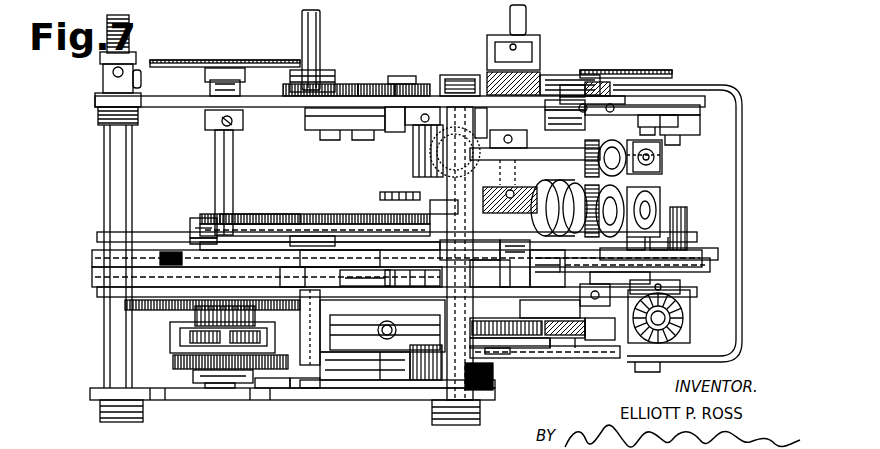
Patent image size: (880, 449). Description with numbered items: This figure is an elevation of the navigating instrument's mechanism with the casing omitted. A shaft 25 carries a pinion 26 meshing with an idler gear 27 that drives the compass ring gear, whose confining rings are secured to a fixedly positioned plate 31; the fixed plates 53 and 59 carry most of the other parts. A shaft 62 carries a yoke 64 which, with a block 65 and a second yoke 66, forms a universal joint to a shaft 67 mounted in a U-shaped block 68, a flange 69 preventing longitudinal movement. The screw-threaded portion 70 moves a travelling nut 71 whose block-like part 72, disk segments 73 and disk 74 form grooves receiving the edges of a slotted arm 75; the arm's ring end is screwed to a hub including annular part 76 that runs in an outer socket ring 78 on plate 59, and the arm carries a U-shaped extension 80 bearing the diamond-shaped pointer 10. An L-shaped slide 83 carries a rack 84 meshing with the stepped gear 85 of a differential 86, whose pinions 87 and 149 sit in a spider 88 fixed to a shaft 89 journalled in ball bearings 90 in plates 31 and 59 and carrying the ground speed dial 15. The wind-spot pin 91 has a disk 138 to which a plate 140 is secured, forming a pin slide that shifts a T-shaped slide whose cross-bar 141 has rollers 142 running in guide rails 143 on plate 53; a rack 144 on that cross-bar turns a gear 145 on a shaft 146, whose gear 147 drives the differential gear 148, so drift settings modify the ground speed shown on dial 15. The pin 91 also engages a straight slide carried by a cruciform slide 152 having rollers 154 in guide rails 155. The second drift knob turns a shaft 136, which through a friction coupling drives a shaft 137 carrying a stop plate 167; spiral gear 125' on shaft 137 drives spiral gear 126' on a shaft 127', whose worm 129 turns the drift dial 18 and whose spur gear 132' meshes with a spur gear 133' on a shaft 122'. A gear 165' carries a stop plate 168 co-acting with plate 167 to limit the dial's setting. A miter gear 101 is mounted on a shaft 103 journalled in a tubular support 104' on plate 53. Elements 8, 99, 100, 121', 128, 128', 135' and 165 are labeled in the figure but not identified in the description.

The rack 8 is at (391, 84).
The diamond-shaped pointer 10 is at (570, 73).
The ground speed dial 15 is at (170, 60).
The drift dial 18 is at (652, 70).
The shaft 25 is at (321, 36).
The pinion 26 is at (334, 84).
The idler gear 27 is at (413, 84).
The fixedly positioned plate 31 is at (684, 121).
The fixed plate 53 is at (92, 256).
The fixed plate 59 is at (92, 388).
The shaft 62 is at (305, 330).
The yoke 64 is at (366, 372).
The block 65 is at (399, 374).
The yoke 66 is at (420, 378).
The shaft 67 is at (545, 348).
The U-shaped block 68 is at (502, 371).
The flange 69 is at (520, 346).
The screw-threaded portion 70 is at (600, 348).
The travelling nut 71 is at (566, 319).
The part of travelling nut 72 is at (532, 319).
The disk segments 73 is at (580, 348).
The disk 74 is at (560, 348).
The slotted arm 75 is at (352, 362).
The annular part of hub 76 is at (382, 362).
The outer socket ring 78 is at (346, 380).
The U-shaped extension 80 is at (742, 322).
The L-shaped slide 83 is at (125, 296).
The rack 84 is at (125, 306).
The gear 85 is at (195, 313).
The differential 86 is at (193, 376).
The pinions 87 is at (180, 328).
The spider 88 is at (185, 341).
The shaft 89 is at (234, 155).
The ball bearings 90 is at (243, 119).
The wind-spot pin 91 is at (380, 195).
The gear 99 is at (684, 311).
The hub 100 is at (690, 325).
The miter gear 101 is at (682, 291).
The shaft 103 is at (656, 212).
The tubular support 104' is at (679, 228).
The gear 121' is at (439, 168).
The shaft 122' is at (422, 144).
The spiral gear 125' is at (506, 191).
The spiral gear 126' is at (554, 202).
The shaft 127' is at (680, 200).
The block 128 is at (434, 210).
The shaft 128' is at (677, 165).
The worm 129 is at (586, 172).
The spur gear 132' is at (659, 204).
The spur gear 133' is at (661, 157).
The bracket 135' is at (518, 140).
The shaft 136 is at (528, 22).
The shaft 137 is at (528, 150).
The disk 138 is at (382, 219).
The plate 140 is at (376, 244).
The cross-bar 141 is at (192, 222).
The rollers 142 is at (190, 233).
The guide rails 143 is at (97, 232).
The rack 144 is at (248, 214).
The gear 145 is at (296, 214).
The shaft 146 is at (275, 395).
The gear 147 is at (306, 395).
The gear 148 is at (198, 380).
The pinions 149 is at (180, 358).
The cruciform slide 152 is at (442, 303).
The rollers 154 is at (364, 271).
The guide rails 155 is at (412, 271).
The block 165 is at (561, 94).
The gear 165' is at (590, 69).
The stop plate 167 is at (561, 107).
The stop plate 168 is at (630, 107).